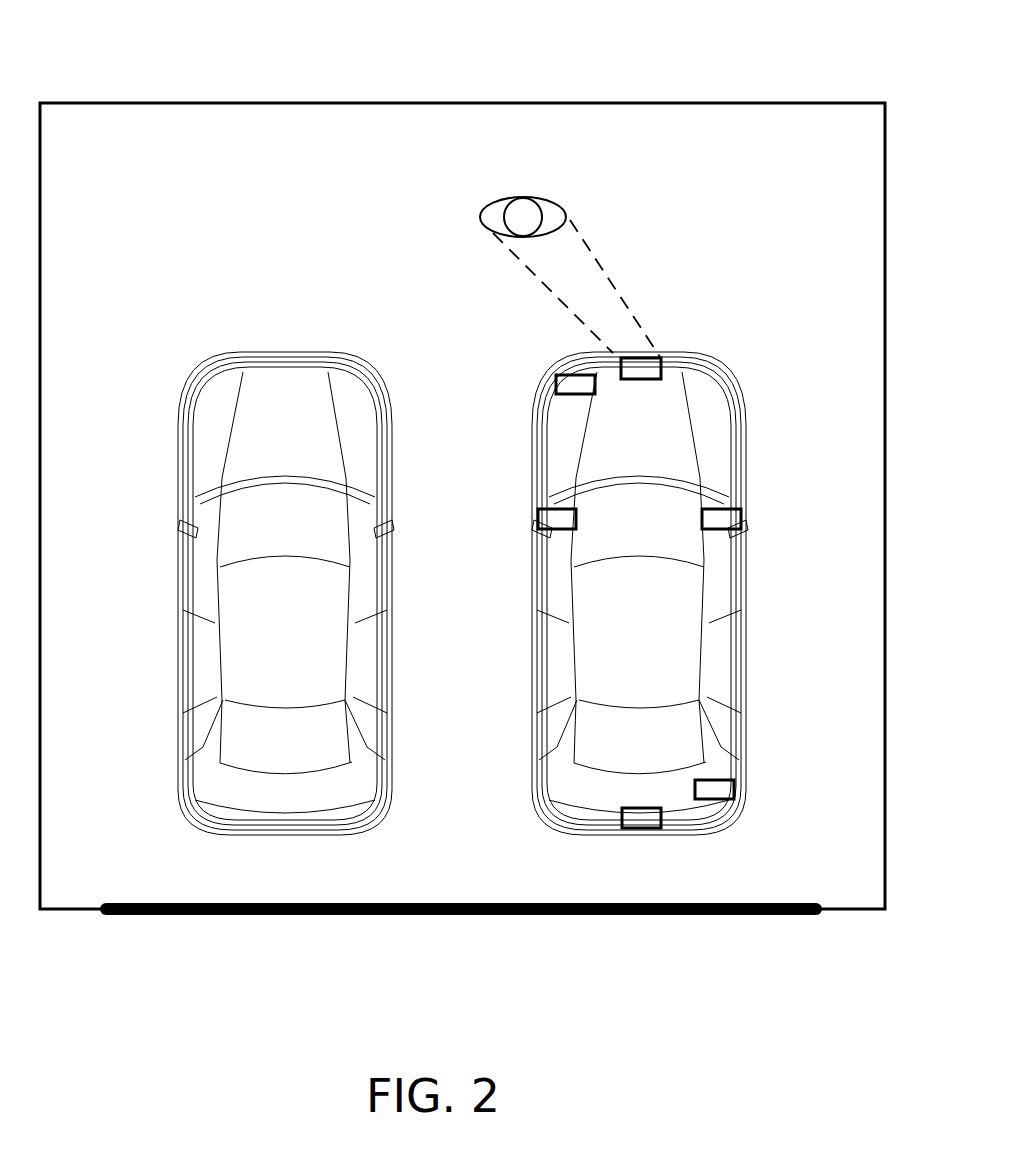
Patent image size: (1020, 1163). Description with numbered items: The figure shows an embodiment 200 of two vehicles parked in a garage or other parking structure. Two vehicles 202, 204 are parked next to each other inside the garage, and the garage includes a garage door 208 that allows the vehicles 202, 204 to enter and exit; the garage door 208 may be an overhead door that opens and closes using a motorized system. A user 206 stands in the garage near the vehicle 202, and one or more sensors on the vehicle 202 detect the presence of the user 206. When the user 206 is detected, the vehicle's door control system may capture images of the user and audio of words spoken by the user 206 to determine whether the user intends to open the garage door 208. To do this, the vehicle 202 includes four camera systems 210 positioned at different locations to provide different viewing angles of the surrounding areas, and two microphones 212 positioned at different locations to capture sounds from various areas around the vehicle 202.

The embodiment 200 is at (753, 45).
The vehicle 202 is at (660, 636).
The vehicle 204 is at (303, 636).
The user 206 is at (547, 198).
The garage door 208 is at (622, 915).
The camera systems 210 is at (661, 358).
The microphones 212 is at (556, 375).